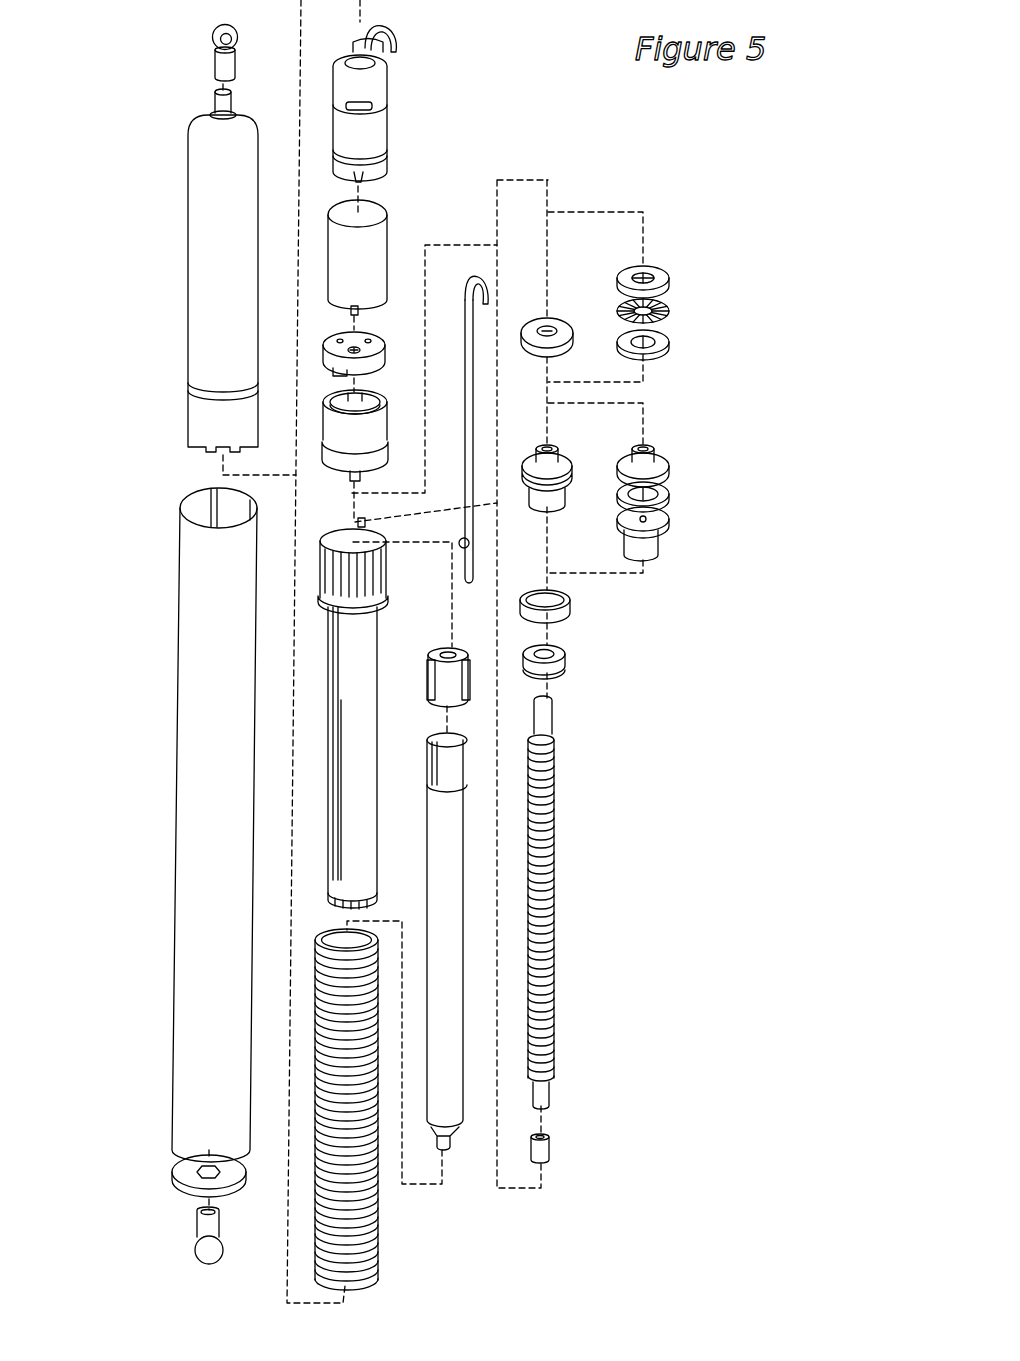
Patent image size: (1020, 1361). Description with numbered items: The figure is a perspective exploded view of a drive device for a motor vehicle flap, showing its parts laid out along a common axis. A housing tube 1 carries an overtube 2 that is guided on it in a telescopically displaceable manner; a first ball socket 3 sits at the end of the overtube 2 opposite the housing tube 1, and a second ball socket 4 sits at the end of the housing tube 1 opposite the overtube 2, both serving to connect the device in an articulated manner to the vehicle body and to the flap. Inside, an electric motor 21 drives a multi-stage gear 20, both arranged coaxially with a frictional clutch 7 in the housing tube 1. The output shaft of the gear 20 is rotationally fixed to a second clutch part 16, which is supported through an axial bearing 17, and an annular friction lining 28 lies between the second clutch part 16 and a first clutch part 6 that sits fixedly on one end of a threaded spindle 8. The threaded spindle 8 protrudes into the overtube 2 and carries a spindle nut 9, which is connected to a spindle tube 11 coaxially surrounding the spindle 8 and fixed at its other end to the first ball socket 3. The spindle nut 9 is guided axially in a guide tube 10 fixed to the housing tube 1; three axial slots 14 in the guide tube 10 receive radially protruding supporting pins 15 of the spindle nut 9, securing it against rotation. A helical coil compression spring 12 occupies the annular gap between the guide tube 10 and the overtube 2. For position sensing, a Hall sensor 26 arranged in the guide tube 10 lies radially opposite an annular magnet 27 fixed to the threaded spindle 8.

The housing tube 1 is at (202, 253).
The overtube 2 is at (190, 798).
The first ball socket 3 is at (203, 1251).
The second ball socket 4 is at (214, 44).
The first clutch part 6 is at (667, 530).
The frictional clutch 7 is at (576, 451).
The threaded spindle 8 is at (554, 916).
The spindle nut 9 is at (457, 672).
The guide tube 10 is at (353, 660).
The spindle tube 11 is at (445, 882).
The helical coil compression spring 12 is at (378, 1239).
The axial slots 14 is at (330, 698).
The supporting pins 15 is at (472, 684).
The second clutch part 16 is at (667, 467).
The axial bearing 17 is at (556, 302).
The gear 20 is at (386, 435).
The electric motor 21 is at (372, 127).
The Hall sensor 26 is at (472, 547).
The annular magnet 27 is at (565, 614).
The annular friction lining 28 is at (662, 498).